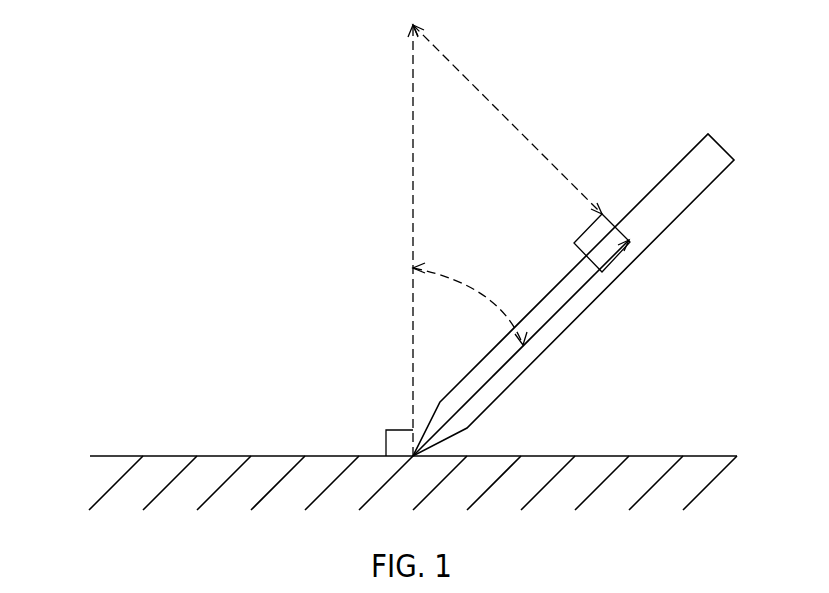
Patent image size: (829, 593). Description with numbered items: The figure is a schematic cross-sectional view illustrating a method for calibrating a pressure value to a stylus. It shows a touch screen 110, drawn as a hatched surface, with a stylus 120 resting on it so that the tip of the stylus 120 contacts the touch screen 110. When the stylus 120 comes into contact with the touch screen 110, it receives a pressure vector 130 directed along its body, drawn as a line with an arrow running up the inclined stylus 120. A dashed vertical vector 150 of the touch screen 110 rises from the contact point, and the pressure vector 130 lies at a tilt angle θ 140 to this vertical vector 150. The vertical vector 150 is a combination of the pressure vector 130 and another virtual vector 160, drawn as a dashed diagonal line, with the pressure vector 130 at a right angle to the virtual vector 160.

The touch screen 110 is at (117, 456).
The stylus 120 is at (683, 215).
The pressure vector 130 is at (583, 283).
The tilt angle θ 140 is at (456, 273).
The vertical vector 150 is at (413, 132).
The virtual vector 160 is at (523, 138).